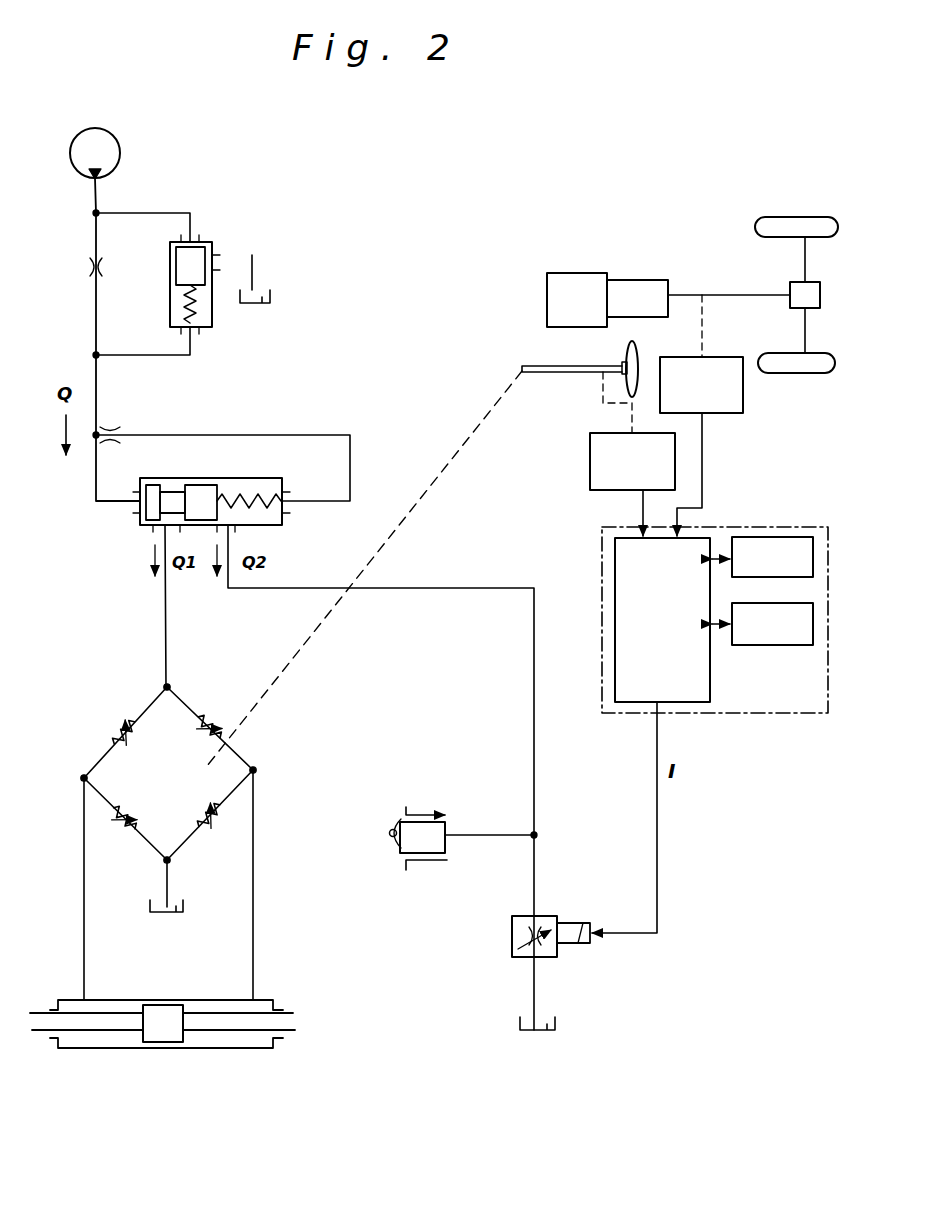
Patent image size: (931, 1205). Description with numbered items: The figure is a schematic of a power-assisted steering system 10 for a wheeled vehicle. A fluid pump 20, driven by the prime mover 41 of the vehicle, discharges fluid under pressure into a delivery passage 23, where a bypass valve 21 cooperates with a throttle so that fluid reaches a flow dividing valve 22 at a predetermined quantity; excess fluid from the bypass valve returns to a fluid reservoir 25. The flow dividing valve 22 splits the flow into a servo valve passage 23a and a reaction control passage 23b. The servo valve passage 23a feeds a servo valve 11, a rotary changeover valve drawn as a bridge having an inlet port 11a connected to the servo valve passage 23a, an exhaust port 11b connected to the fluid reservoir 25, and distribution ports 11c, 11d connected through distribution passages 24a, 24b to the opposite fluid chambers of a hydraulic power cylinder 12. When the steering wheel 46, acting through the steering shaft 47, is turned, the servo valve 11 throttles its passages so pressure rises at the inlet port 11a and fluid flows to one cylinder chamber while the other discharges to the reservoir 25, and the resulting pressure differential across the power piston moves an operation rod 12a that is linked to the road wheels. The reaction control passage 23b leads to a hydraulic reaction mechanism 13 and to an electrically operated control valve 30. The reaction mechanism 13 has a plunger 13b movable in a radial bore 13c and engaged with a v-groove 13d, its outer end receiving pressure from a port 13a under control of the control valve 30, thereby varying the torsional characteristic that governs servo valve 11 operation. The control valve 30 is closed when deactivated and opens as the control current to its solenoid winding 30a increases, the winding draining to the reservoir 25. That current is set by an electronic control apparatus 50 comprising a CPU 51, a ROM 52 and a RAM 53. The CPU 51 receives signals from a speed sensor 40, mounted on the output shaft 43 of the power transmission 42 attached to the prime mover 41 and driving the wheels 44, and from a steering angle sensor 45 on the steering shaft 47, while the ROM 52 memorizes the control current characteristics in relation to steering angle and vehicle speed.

The power-assisted steering system 10 is at (434, 743).
The servo valve 11 is at (106, 720).
The inlet port 11a is at (168, 687).
The exhaust port 11b is at (168, 861).
The distribution port 11c is at (83, 777).
The distribution port 11d is at (254, 770).
The hydraulic power cylinder 12 is at (208, 1049).
The operation rod 12a is at (282, 1017).
The hydraulic reaction mechanism 13 is at (442, 875).
The port 13a is at (492, 837).
The plunger 13b is at (425, 858).
The radial bore 13c is at (447, 818).
The v-groove 13d is at (389, 833).
The fluid pump 20 is at (112, 148).
The bypass valve 21 is at (170, 265).
The flow dividing valve 22 is at (256, 478).
The delivery passage 23 is at (97, 395).
The servo valve passage 23a is at (167, 640).
The reaction control passage 23b is at (465, 588).
The distribution passage 24a is at (82, 892).
The distribution passage 24b is at (254, 928).
The fluid reservoir 25 is at (272, 297).
The electrically operated control valve 30 is at (507, 946).
The solenoid winding 30a is at (575, 922).
The speed sensor 40 is at (722, 357).
The prime mover 41 is at (577, 282).
The power transmission 42 is at (642, 285).
The output shaft 43 is at (725, 292).
The wheels 44 is at (790, 373).
The steering angle sensor 45 is at (675, 448).
The steering wheel 46 is at (639, 352).
The steering shaft 47 is at (552, 366).
The electronic control apparatus 50 is at (720, 527).
The central processing unit 51 is at (615, 555).
The read-only memory 52 is at (800, 537).
The random access memory 53 is at (778, 645).